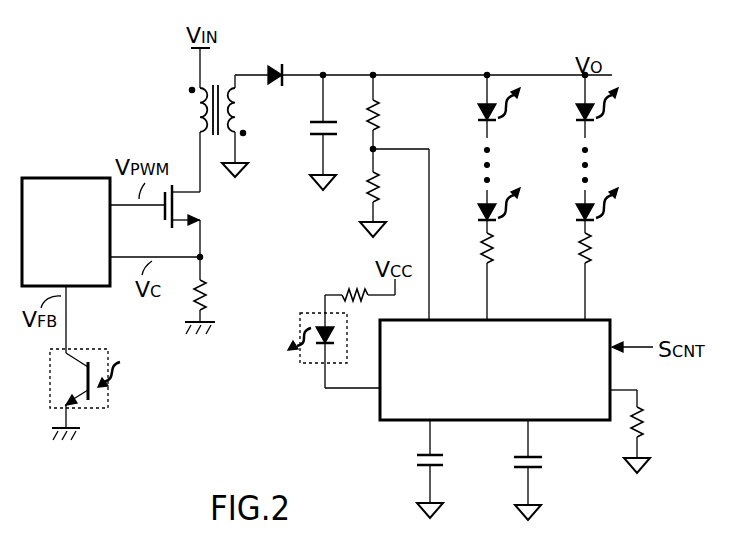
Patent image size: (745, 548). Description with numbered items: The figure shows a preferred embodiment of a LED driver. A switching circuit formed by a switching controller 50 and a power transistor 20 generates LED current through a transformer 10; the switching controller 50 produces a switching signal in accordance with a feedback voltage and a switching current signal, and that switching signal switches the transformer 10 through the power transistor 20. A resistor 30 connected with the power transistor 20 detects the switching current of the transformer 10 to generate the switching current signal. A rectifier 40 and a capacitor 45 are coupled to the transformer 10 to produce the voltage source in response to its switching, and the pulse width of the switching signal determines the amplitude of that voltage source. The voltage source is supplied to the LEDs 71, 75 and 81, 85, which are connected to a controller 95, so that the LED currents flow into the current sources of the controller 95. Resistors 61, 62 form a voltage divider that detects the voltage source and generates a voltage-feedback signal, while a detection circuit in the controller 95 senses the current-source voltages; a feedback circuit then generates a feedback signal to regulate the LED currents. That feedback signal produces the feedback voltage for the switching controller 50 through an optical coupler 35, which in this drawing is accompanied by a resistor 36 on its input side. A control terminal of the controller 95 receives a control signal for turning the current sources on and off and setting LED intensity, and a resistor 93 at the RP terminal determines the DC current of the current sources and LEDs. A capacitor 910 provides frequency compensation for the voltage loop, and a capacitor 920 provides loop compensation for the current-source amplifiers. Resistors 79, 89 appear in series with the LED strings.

The transformer 10 is at (214, 83).
The power transistor 20 is at (203, 204).
The resistor 30 is at (207, 288).
The optical coupler 35 is at (78, 345).
The resistor / photodiode of optocoupler 36 is at (357, 282).
The rectifier 40 is at (276, 65).
The capacitor 45 is at (310, 127).
The switching controller 50 is at (62, 159).
The resistor 61 is at (382, 106).
The resistor 62 is at (382, 181).
The LED 71 is at (473, 114).
The LED 75 is at (473, 213).
The current sense resistor of first LED string 79 is at (498, 245).
The LED 81 is at (570, 114).
The LED 85 is at (572, 213).
The current sense resistor of Nth LED string 89 is at (596, 245).
The resistor 93 is at (648, 416).
The controller 95 is at (611, 325).
The capacitor 910 is at (413, 464).
The capacitor 920 is at (512, 464).